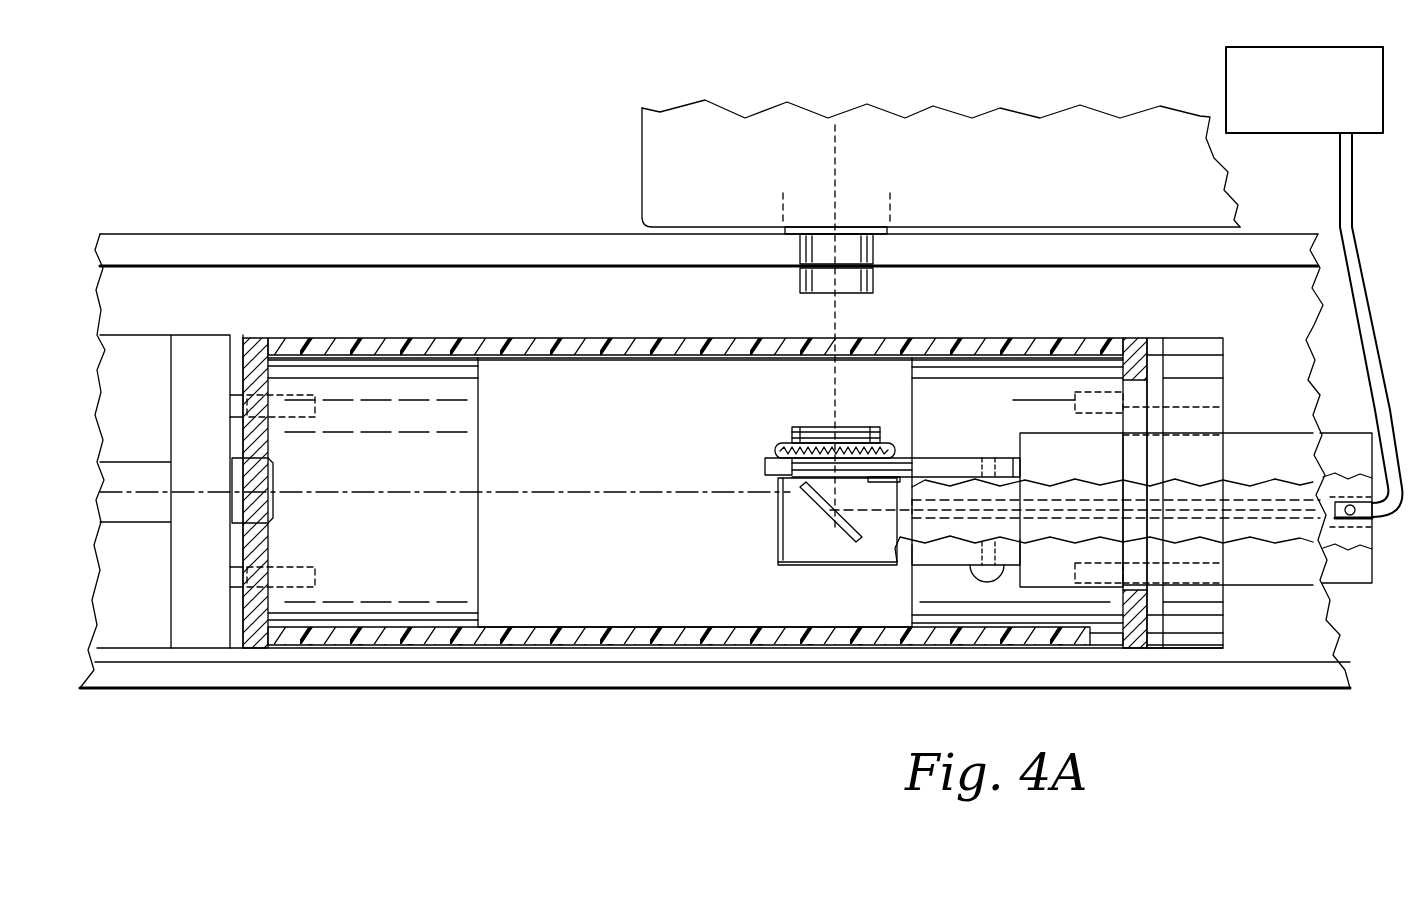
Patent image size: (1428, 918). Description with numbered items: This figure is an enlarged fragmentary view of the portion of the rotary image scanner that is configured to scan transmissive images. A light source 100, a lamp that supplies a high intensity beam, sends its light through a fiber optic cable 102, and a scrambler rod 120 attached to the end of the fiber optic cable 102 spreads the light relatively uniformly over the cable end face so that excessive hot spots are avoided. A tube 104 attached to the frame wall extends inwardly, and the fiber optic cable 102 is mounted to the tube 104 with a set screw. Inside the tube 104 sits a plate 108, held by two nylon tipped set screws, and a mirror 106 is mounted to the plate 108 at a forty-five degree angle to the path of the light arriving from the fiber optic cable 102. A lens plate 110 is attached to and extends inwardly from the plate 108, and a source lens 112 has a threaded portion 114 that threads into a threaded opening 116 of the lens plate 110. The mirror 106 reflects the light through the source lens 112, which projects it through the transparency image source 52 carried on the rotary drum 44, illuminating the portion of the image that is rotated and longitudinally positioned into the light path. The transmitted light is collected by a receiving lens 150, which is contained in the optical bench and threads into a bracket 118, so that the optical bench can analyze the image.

The rotary drum 44 is at (356, 340).
The image source 52 is at (462, 358).
The light source 100 is at (1265, 133).
The fiber optic cable 102 is at (1370, 300).
The tube 104 is at (1282, 586).
The mirror 106 is at (833, 515).
The plate 108 is at (778, 522).
The lens plate 110 is at (972, 458).
The source lens 112 is at (786, 450).
The threaded portion 114 is at (838, 442).
The threaded opening 116 is at (896, 462).
The bracket 118 is at (802, 270).
The scrambler rod 120 is at (1345, 522).
The receiving lens 150 is at (874, 281).